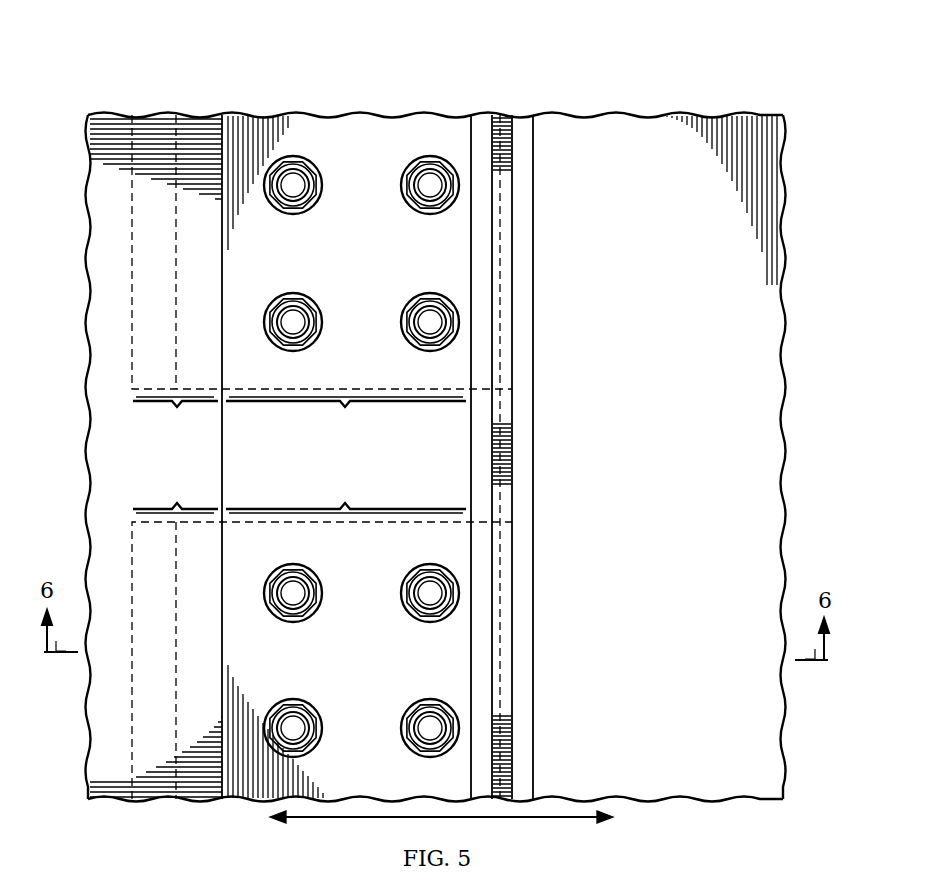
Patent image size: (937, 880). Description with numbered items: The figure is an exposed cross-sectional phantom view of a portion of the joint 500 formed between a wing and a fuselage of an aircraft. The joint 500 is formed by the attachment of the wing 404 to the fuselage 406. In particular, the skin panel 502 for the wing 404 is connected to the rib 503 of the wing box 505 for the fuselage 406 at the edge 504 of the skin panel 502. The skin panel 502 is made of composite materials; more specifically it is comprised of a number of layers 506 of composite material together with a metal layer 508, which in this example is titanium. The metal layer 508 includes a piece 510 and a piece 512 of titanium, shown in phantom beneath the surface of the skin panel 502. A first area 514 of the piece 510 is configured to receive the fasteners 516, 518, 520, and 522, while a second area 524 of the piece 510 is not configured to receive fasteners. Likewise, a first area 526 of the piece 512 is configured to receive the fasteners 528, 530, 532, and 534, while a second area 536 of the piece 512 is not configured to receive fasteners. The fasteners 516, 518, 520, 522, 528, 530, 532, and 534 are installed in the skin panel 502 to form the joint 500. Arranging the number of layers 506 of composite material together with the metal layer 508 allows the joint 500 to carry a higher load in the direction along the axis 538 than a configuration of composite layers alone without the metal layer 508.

The joint 500 is at (536, 64).
The wing 404 is at (157, 114).
The fuselage 406 is at (682, 114).
The skin panel 502 is at (117, 422).
The rib 503 is at (753, 435).
The edge 504 is at (482, 154).
The wing box 505 is at (767, 498).
The number of layers 506 is at (104, 471).
The metal layer 508 is at (148, 704).
The piece 510 is at (143, 550).
The piece 512 is at (143, 253).
The first area 514 is at (346, 493).
The fastener 516 is at (322, 604).
The fastener 518 is at (402, 585).
The fastener 520 is at (322, 739).
The fastener 522 is at (402, 720).
The second area 524 is at (175, 493).
The first area 526 is at (346, 419).
The fastener 528 is at (320, 315).
The fastener 530 is at (402, 327).
The fastener 532 is at (320, 177).
The fastener 534 is at (402, 192).
The second area 536 is at (175, 419).
The axis 538 is at (529, 820).